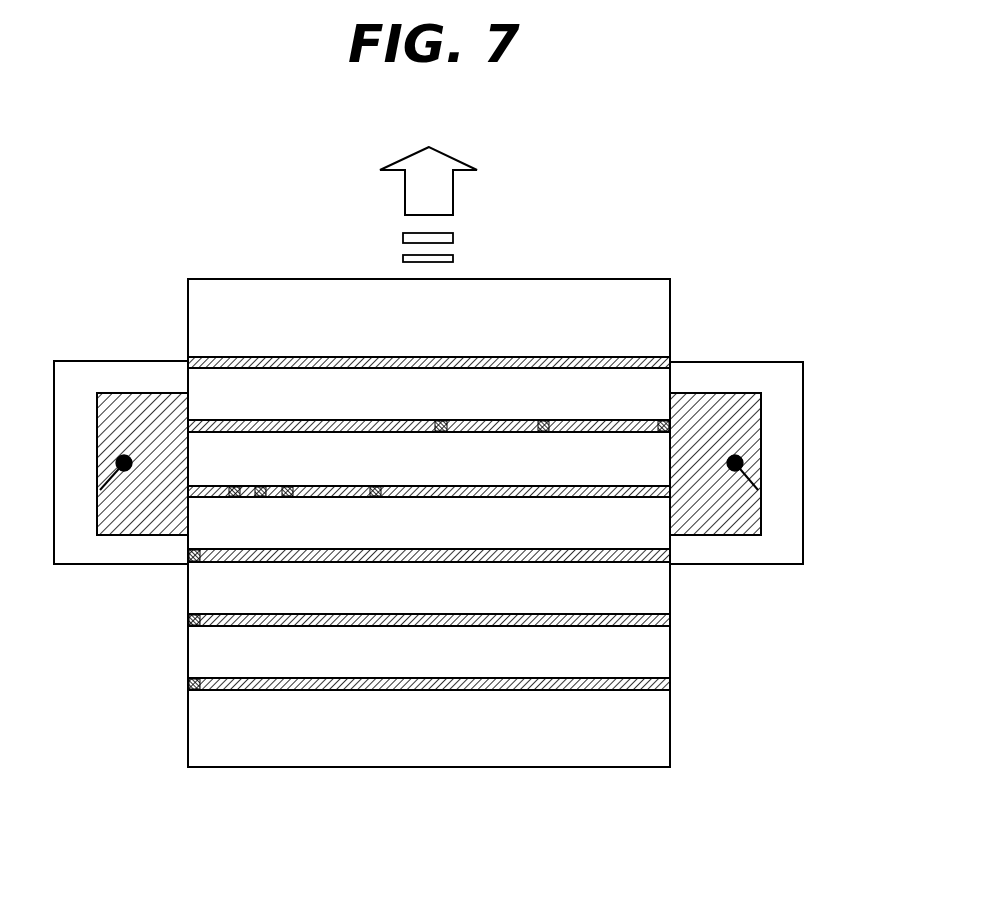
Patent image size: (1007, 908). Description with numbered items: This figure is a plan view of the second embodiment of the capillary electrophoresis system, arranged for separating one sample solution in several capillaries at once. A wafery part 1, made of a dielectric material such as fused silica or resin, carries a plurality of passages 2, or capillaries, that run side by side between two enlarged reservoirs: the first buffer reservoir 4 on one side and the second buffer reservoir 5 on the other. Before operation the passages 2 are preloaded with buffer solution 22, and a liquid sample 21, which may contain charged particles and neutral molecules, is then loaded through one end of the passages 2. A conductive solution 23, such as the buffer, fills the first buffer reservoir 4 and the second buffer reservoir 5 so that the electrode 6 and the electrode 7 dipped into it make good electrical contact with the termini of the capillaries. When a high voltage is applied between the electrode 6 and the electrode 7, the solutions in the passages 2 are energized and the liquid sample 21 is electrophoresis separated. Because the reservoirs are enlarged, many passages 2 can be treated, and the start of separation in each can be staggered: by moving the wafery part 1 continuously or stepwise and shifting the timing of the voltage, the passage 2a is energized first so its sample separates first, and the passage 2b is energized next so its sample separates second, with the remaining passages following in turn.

The wafery part 1 is at (247, 297).
The passages 2 is at (562, 357).
The passage 2a is at (614, 420).
The passage 2b is at (607, 497).
The first buffer reservoir 4 is at (137, 527).
The second buffer reservoir 5 is at (718, 527).
The electrode 6 is at (96, 490).
The electrode 7 is at (756, 492).
The liquid sample 21 is at (373, 486).
The buffer solution 22 is at (372, 486).
The conductive solution 23 is at (113, 398).